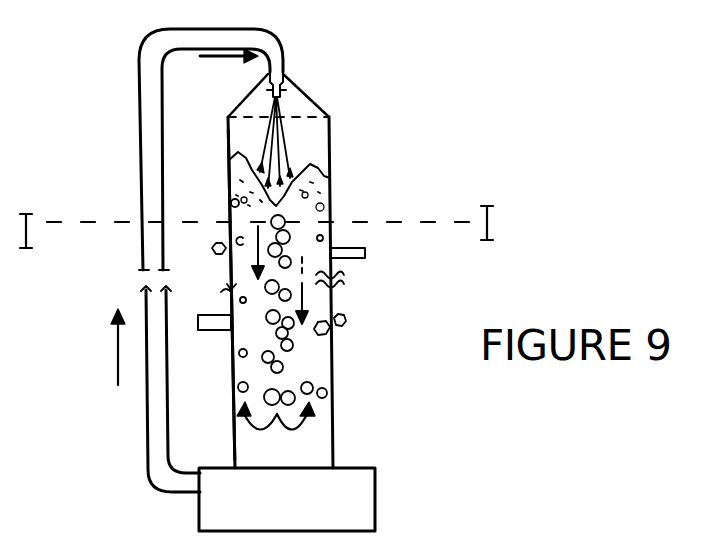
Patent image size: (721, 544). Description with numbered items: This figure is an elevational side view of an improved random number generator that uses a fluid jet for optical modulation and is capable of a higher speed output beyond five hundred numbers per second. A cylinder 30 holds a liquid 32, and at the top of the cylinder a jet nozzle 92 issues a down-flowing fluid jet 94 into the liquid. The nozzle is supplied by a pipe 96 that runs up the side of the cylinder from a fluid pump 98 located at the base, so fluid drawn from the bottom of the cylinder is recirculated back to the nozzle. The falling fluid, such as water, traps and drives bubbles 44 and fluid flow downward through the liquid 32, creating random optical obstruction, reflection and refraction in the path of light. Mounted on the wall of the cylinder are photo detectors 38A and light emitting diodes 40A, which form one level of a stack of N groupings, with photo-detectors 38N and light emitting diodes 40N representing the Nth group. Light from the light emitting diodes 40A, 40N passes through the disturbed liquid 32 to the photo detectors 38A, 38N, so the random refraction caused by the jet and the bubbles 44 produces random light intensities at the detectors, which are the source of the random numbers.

The cylinder 30 is at (330, 120).
The liquid 32 is at (235, 165).
The photo detectors 38A is at (300, 192).
The photo-detectors 38N is at (343, 319).
The light emitting diodes 40A is at (365, 250).
The light emitting diodes 40N is at (205, 325).
The bubbles 44 is at (266, 392).
The jet nozzle 92 is at (280, 87).
The fluid jet 94 is at (268, 148).
The pipe 96 is at (147, 183).
The fluid pump 98 is at (376, 511).